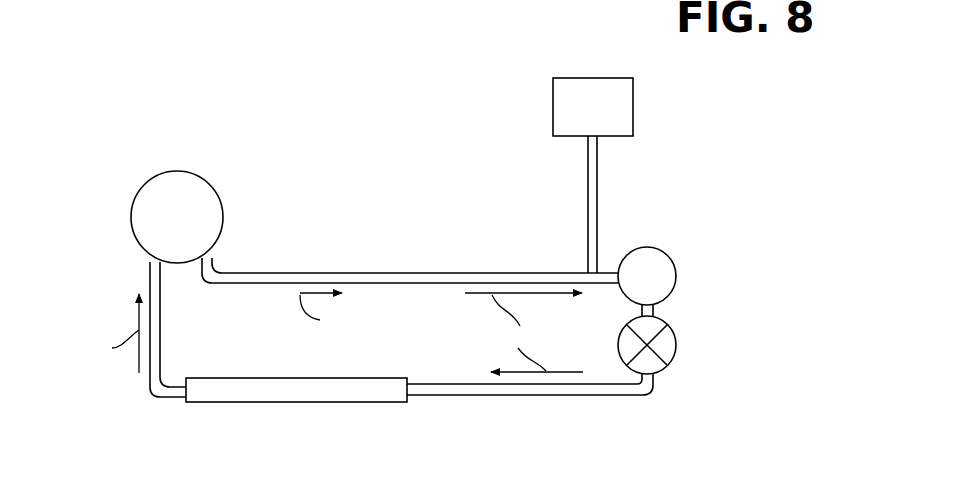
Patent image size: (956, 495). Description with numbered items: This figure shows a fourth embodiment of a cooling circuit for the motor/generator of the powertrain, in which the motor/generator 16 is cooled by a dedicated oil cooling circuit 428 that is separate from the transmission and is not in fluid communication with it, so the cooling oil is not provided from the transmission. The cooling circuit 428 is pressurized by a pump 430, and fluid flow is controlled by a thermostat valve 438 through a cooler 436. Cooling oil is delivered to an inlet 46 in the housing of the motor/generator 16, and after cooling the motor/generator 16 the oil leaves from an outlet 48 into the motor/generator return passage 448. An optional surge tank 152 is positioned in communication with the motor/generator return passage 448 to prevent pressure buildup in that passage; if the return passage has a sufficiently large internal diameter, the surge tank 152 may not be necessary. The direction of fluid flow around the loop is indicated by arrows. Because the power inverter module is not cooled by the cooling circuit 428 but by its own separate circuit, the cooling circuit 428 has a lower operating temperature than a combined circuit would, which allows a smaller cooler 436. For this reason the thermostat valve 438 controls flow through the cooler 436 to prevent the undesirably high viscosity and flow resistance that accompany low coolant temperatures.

The motor/generator 16 is at (177, 217).
The inlet 46 is at (148, 262).
The outlet 48 is at (213, 257).
The surge tank 152 is at (593, 175).
The oil cooling circuit 428 is at (436, 231).
The pump 430 is at (649, 247).
The cooler 436 is at (320, 403).
The thermostat valve 438 is at (676, 343).
The motor/generator return passage 448 is at (466, 272).